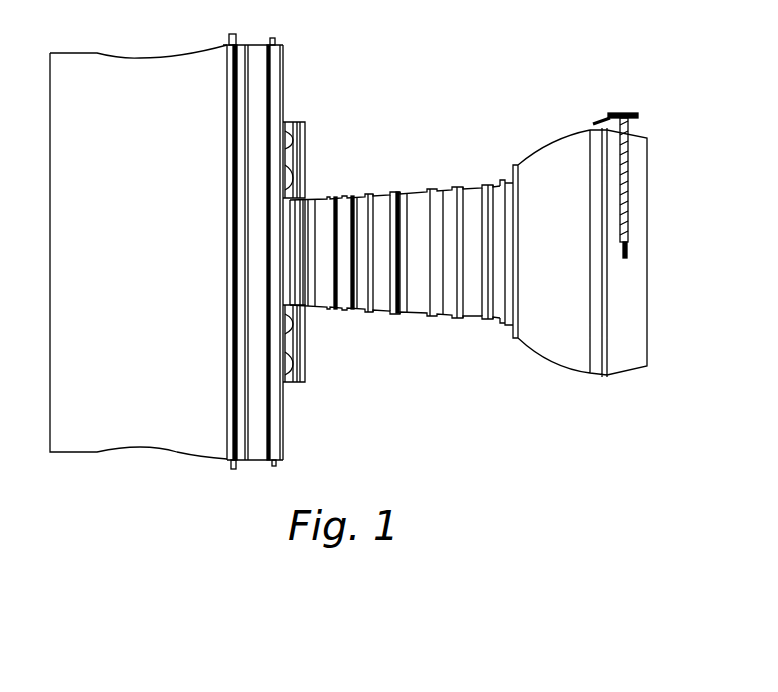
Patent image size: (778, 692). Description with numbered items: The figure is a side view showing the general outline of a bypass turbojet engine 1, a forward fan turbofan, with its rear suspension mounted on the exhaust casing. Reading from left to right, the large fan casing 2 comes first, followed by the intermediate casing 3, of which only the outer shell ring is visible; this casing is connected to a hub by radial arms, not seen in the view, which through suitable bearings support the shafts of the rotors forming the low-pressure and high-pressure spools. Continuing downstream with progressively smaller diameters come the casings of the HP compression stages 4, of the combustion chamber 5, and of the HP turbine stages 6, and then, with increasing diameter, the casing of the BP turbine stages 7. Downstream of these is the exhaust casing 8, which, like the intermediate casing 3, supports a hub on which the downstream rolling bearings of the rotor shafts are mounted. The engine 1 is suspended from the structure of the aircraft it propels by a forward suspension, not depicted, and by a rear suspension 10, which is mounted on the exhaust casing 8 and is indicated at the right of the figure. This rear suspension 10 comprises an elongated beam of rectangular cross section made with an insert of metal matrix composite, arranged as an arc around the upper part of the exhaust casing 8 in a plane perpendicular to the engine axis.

The bypass turbojet engine 1 is at (427, 140).
The fan casing 2 is at (184, 433).
The intermediate casing 3 is at (260, 445).
The HP compression stages casing 4 is at (330, 308).
The combustion chamber casing 5 is at (388, 312).
The HP turbine stages casing 6 is at (473, 319).
The BP turbine stages casing 7 is at (557, 360).
The exhaust casing 8 is at (628, 352).
The rear suspension 10 is at (648, 129).